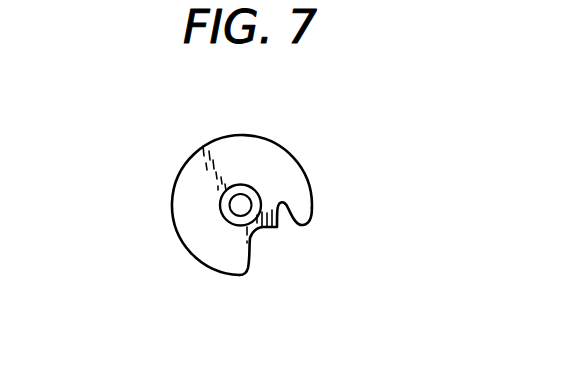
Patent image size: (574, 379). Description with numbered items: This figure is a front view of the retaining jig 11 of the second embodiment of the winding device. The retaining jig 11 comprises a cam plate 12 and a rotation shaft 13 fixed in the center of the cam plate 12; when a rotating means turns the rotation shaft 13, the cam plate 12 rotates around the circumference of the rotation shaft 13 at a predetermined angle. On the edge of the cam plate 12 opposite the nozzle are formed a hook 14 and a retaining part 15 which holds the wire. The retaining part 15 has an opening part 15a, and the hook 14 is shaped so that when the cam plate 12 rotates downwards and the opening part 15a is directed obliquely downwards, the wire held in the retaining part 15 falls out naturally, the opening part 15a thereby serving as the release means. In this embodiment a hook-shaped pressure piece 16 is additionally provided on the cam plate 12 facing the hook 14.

The retaining jig 11 is at (267, 136).
The cam plate 12 is at (178, 215).
The rotation shaft 13 is at (260, 190).
The hook 14 is at (306, 210).
The retaining part 15 is at (288, 218).
The opening part 15a is at (280, 235).
The hook-shaped pressure piece 16 is at (243, 273).